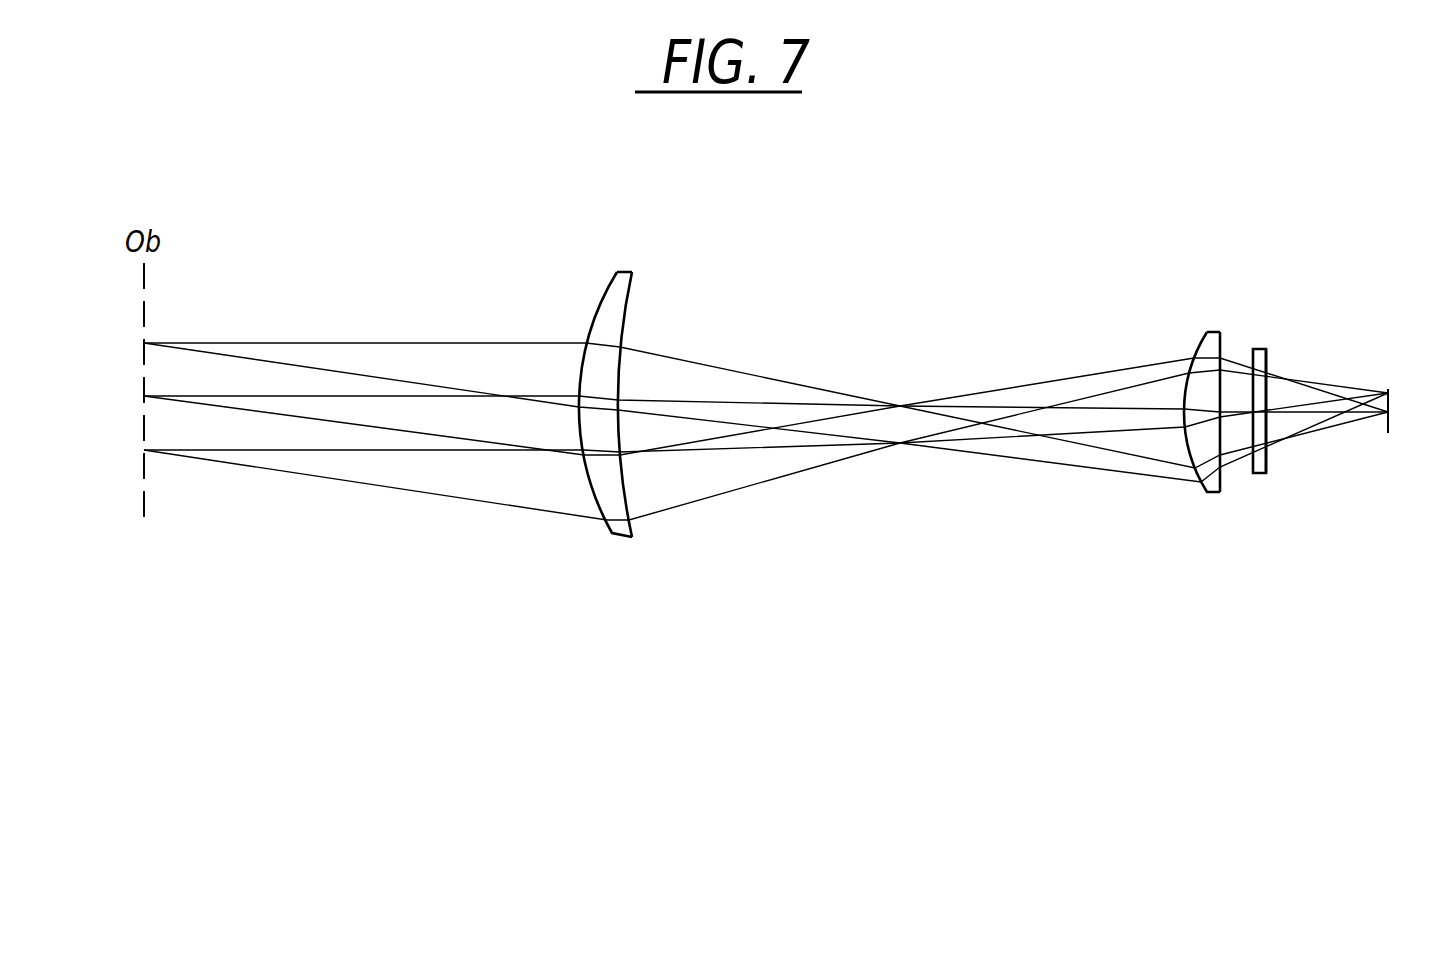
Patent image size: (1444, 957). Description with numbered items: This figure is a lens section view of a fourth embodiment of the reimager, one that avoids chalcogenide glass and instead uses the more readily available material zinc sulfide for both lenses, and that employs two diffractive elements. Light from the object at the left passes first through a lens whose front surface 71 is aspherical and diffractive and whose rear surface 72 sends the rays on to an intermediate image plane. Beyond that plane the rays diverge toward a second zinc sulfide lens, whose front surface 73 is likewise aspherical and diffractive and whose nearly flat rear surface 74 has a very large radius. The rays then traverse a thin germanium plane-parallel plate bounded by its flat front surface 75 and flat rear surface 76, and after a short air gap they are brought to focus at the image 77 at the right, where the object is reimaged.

The front surface of first lens 71 is at (605, 510).
The rear surface of first lens 72 is at (633, 493).
The front surface of second lens 73 is at (1198, 338).
The rear surface of second lens 74 is at (1222, 338).
The front surface of germanium plate 75 is at (1253, 463).
The rear surface of germanium plate 76 is at (1269, 463).
The image 77 is at (1388, 433).